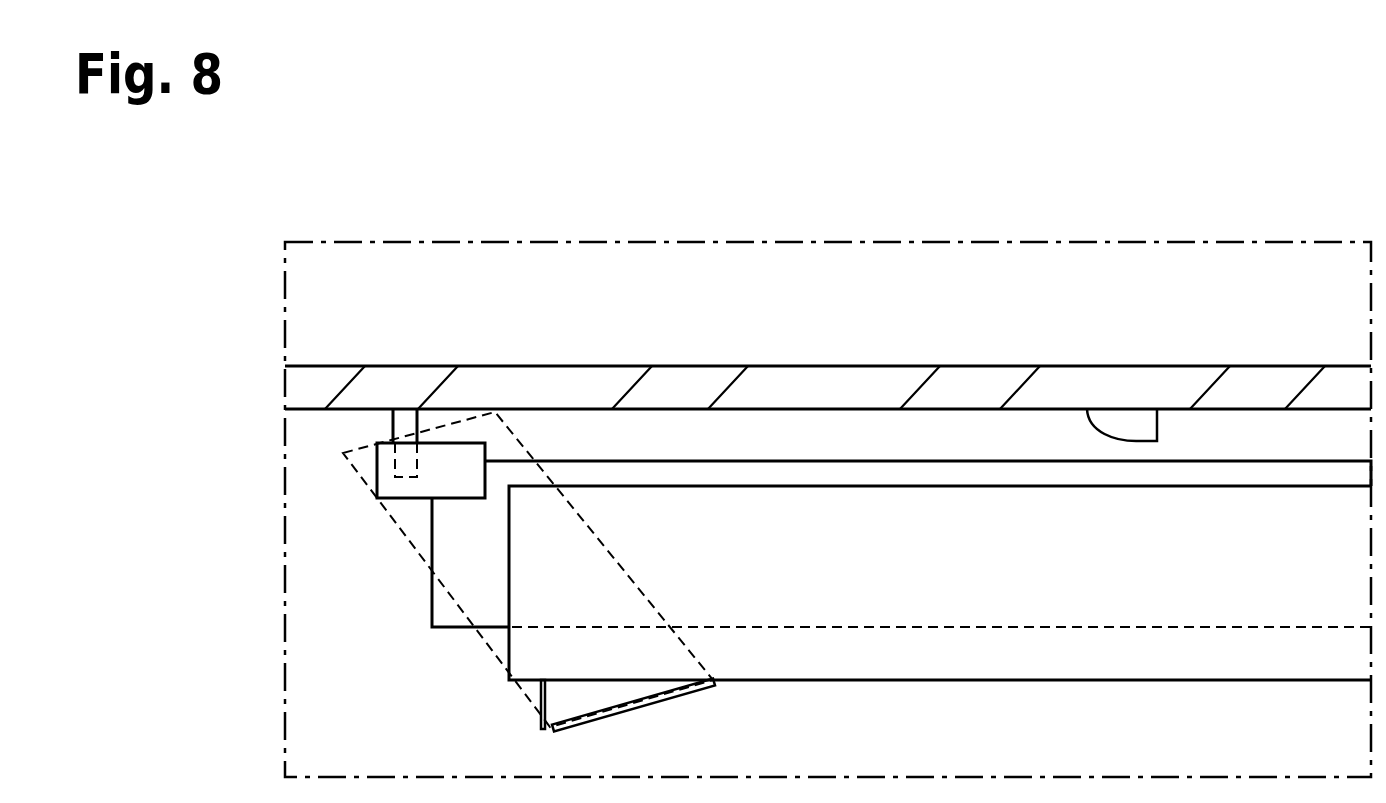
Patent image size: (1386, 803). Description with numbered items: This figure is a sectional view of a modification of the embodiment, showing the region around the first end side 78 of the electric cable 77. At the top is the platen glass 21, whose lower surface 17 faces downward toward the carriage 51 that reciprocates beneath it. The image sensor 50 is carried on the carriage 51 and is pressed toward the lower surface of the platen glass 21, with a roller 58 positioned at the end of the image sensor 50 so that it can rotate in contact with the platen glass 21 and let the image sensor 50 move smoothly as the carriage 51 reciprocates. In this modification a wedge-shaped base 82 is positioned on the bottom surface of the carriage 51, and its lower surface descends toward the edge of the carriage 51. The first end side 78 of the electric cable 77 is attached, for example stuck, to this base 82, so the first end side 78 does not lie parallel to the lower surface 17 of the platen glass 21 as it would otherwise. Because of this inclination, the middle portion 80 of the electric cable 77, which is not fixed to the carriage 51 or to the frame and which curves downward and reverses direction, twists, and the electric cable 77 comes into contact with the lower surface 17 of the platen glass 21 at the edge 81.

The platen glass 21 is at (850, 366).
The lower surface of platen glass 17 is at (1157, 440).
The image sensor 50 is at (1263, 460).
The carriage 51 is at (1190, 680).
The roller 58 is at (392, 428).
The edge 81 is at (518, 438).
The middle portion 80 is at (403, 530).
The wedge-shaped base 82 is at (542, 725).
The first end side 78 is at (674, 700).
The electric cable 77 is at (648, 750).